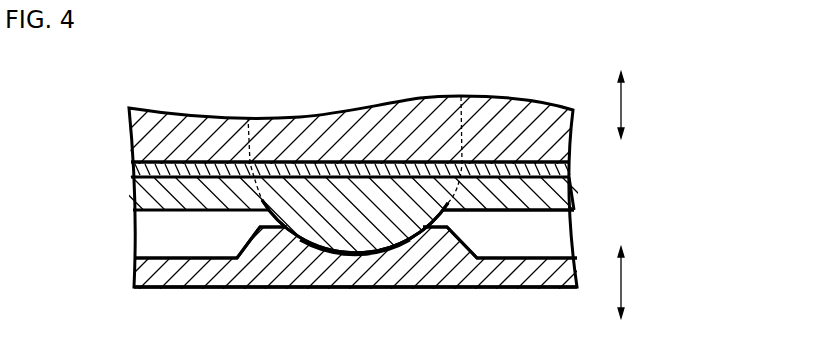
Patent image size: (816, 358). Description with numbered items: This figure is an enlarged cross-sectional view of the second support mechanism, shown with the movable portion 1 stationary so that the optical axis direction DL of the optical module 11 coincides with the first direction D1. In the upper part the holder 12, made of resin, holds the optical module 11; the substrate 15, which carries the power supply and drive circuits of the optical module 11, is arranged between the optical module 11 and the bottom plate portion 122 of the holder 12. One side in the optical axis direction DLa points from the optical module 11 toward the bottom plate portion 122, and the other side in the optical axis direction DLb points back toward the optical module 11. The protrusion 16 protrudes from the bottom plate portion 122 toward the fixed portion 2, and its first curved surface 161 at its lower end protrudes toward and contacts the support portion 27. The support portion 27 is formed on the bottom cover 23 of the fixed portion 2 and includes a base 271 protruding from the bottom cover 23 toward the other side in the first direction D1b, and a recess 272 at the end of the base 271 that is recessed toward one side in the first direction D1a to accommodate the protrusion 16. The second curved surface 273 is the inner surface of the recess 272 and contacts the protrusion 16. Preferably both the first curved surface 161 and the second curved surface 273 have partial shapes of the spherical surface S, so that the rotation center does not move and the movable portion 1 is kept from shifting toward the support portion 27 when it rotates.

The movable portion 1 is at (196, 120).
The fixed portion 2 is at (178, 291).
The optical module 11 is at (130, 128).
The holder 12 is at (572, 194).
The substrate 15 is at (131, 167).
The bottom plate portion 122 is at (133, 193).
The protrusion 16 is at (299, 245).
The first curved surface 161 is at (306, 241).
The bottom cover 23 is at (150, 273).
The support portion 27 is at (267, 245).
The base 271 is at (441, 247).
The recess 272 is at (385, 251).
The second curved surface 273 is at (392, 242).
The spherical surface S is at (468, 122).
The optical axis direction DL is at (644, 105).
The one side in the optical axis direction DLa is at (624, 147).
The other side in the optical axis direction DLb is at (624, 65).
The first direction D1 is at (644, 282).
The one side in the first direction D1a is at (625, 327).
The other side in the first direction D1b is at (625, 239).